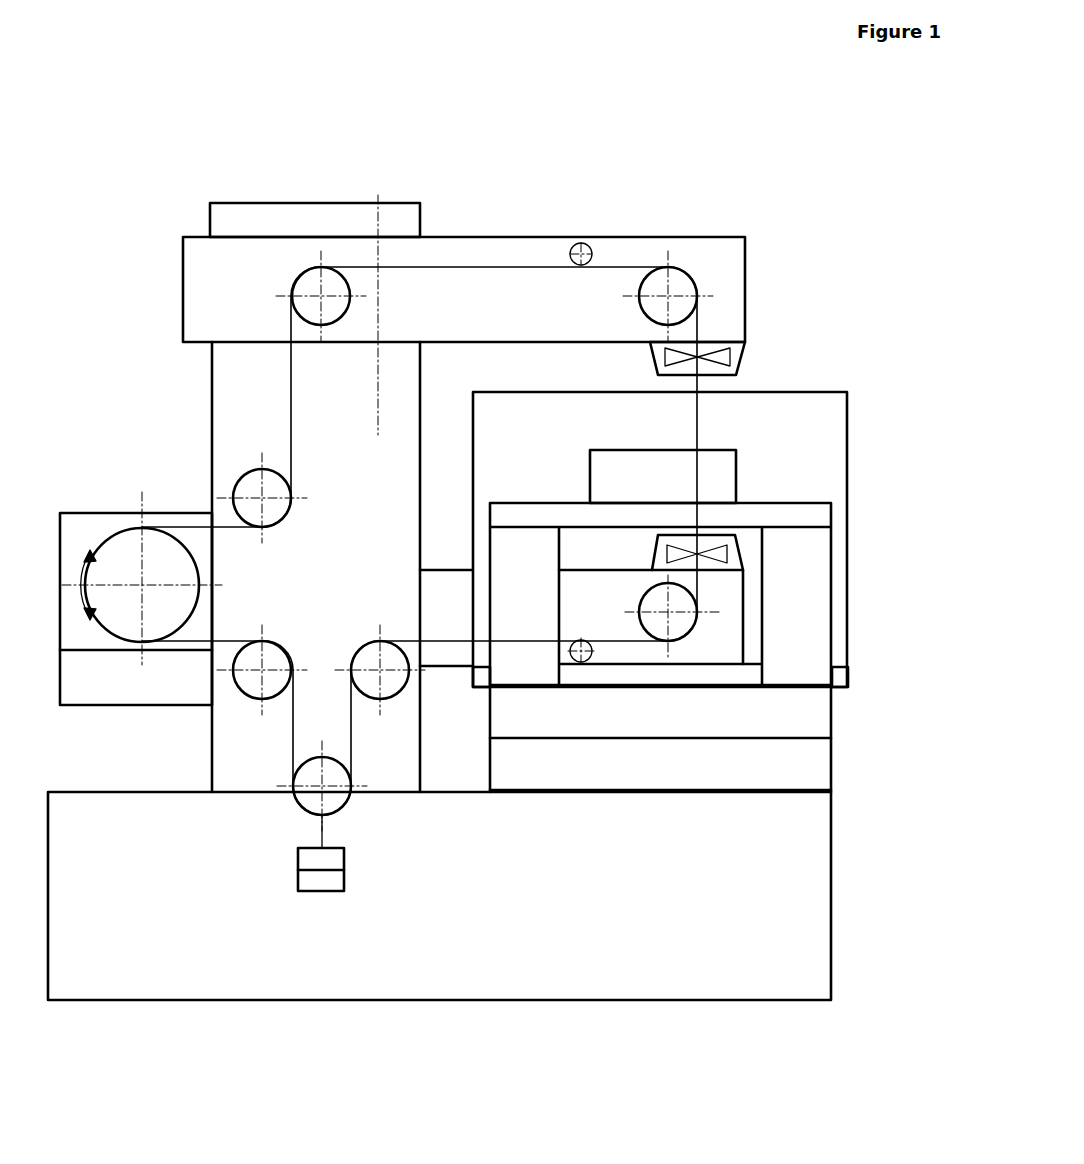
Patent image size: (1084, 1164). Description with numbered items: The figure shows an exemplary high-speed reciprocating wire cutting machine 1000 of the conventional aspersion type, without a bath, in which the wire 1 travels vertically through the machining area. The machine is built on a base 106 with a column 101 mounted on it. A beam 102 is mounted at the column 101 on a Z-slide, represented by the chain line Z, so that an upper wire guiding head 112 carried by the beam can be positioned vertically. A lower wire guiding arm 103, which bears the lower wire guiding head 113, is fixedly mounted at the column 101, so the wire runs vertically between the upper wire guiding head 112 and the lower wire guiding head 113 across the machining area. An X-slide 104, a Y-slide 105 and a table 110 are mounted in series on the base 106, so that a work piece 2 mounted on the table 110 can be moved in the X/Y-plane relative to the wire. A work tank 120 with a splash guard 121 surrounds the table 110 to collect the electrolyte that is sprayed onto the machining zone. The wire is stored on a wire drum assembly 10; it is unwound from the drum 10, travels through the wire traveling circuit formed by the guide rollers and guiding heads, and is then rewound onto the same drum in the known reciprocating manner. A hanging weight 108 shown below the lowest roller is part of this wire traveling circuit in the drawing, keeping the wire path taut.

The high-speed reciprocating wire cutting machine 1000 is at (554, 138).
The cutting wire 1 is at (697, 420).
The work piece 2 is at (713, 484).
The wire drum assembly 10 is at (80, 525).
The column 101 is at (237, 218).
The beam 102 is at (260, 251).
The lower wire guiding arm 103 is at (735, 635).
The X-slide 104 is at (786, 765).
The Y-slide 105 is at (755, 714).
The base 106 is at (710, 918).
The tensioning weight 108 is at (331, 798).
The table 110 is at (783, 512).
The upper wire guiding head 112 is at (735, 362).
The lower wire guiding head 113 is at (735, 554).
The work tank 120 is at (841, 674).
The splash guard 121 is at (811, 482).
The chain line Z is at (378, 221).